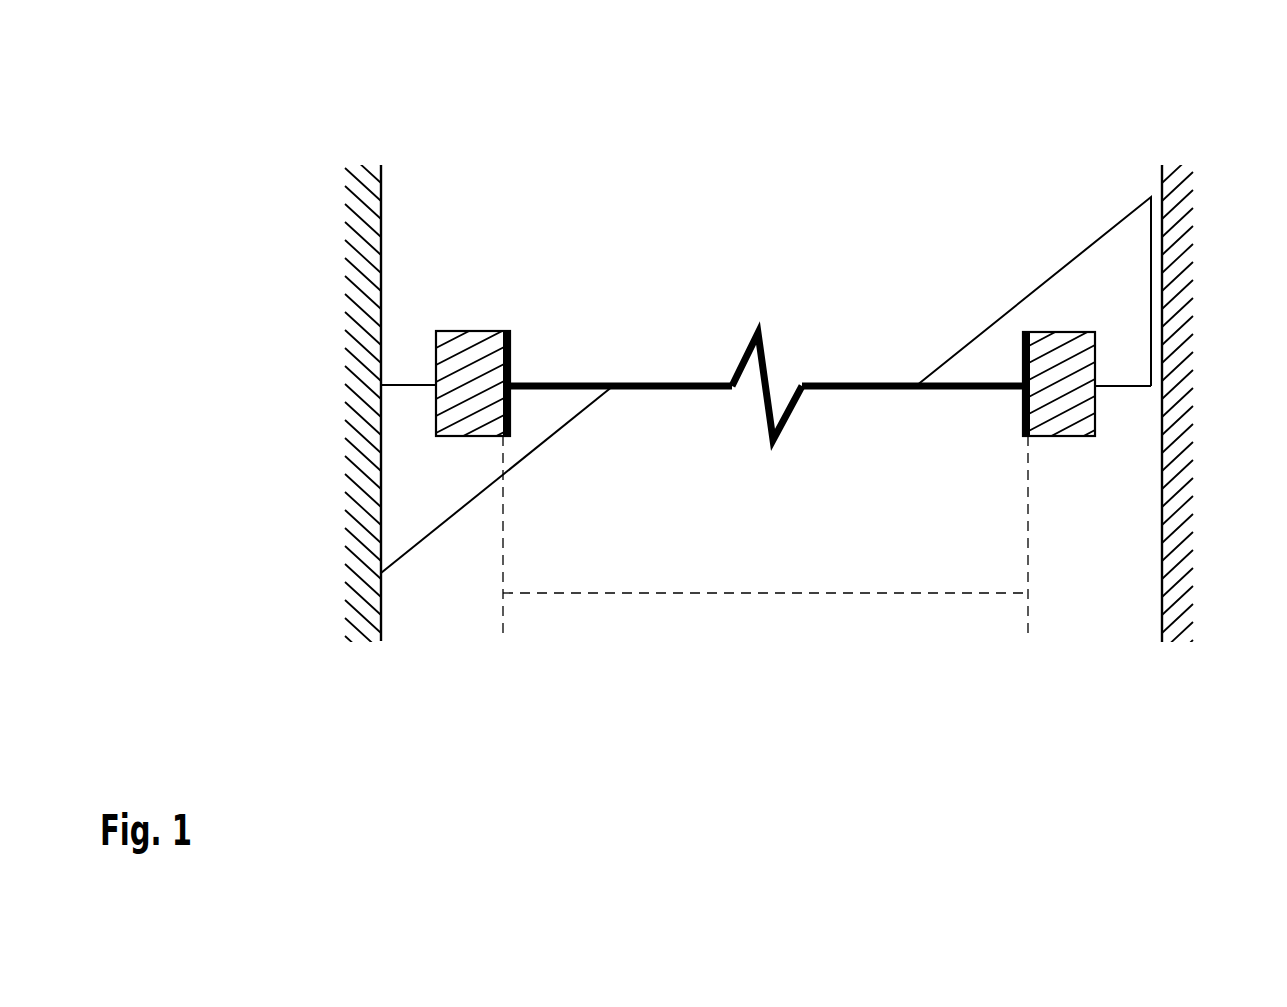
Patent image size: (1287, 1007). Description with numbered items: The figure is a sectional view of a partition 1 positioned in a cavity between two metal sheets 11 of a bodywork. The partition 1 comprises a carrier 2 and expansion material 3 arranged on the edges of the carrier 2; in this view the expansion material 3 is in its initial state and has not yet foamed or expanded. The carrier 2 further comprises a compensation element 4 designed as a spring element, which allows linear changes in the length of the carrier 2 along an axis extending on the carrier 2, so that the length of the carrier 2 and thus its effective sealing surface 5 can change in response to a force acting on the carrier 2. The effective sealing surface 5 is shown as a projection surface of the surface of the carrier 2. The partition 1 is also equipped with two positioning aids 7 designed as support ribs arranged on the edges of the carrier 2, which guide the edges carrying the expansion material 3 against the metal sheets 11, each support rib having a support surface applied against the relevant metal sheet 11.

The partition 1 is at (962, 147).
The carrier 2 is at (887, 381).
The expansion material 3 is at (465, 353).
The compensation element 4 is at (757, 331).
The effective sealing surface 5 is at (848, 591).
The positioning aid 7 is at (451, 478).
The metal sheet 11 is at (372, 598).